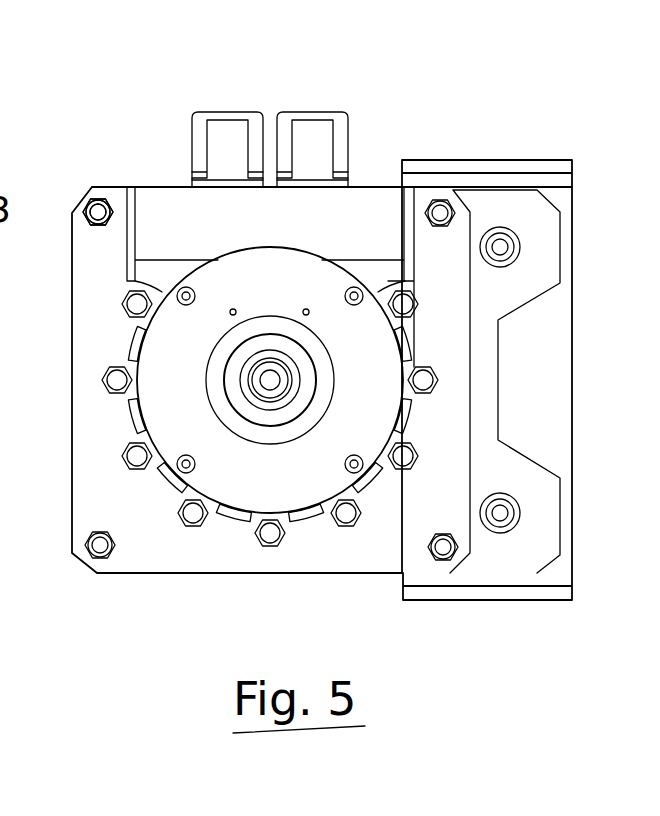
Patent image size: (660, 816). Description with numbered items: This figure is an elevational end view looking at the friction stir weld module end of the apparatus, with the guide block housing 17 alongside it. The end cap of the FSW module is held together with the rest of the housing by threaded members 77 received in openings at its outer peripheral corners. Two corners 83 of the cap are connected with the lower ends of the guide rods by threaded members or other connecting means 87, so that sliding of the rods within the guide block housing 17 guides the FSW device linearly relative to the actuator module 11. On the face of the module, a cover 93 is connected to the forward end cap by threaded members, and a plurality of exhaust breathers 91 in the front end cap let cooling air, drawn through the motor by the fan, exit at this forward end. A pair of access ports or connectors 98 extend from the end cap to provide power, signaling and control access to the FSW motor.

The actuator module 11 is at (110, 577).
The threaded members 77 is at (99, 207).
The access ports or connectors 98 is at (231, 128).
The cover 93 is at (298, 473).
The exhaust breathers 91 is at (192, 513).
The corners 83 is at (533, 545).
The guide block housing 17 is at (548, 362).
The threaded members or other connecting means 87 is at (501, 245).